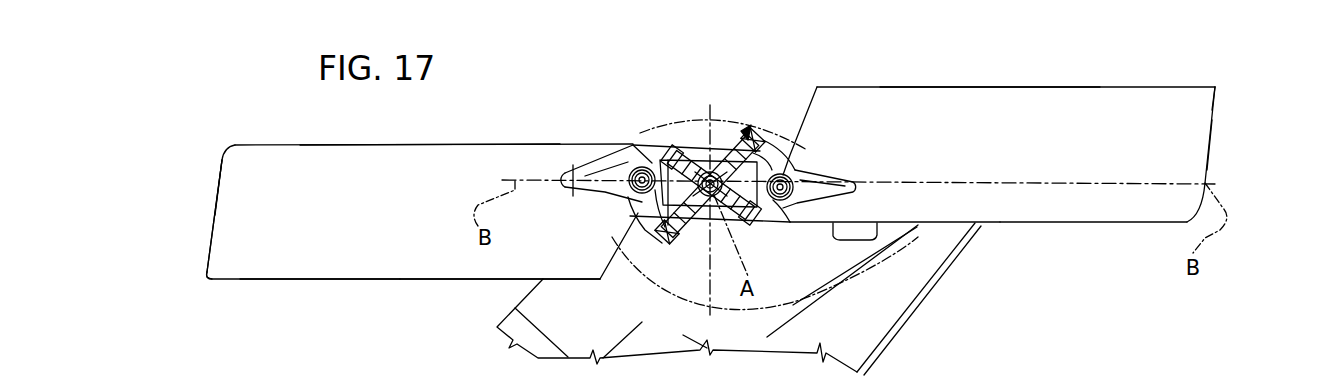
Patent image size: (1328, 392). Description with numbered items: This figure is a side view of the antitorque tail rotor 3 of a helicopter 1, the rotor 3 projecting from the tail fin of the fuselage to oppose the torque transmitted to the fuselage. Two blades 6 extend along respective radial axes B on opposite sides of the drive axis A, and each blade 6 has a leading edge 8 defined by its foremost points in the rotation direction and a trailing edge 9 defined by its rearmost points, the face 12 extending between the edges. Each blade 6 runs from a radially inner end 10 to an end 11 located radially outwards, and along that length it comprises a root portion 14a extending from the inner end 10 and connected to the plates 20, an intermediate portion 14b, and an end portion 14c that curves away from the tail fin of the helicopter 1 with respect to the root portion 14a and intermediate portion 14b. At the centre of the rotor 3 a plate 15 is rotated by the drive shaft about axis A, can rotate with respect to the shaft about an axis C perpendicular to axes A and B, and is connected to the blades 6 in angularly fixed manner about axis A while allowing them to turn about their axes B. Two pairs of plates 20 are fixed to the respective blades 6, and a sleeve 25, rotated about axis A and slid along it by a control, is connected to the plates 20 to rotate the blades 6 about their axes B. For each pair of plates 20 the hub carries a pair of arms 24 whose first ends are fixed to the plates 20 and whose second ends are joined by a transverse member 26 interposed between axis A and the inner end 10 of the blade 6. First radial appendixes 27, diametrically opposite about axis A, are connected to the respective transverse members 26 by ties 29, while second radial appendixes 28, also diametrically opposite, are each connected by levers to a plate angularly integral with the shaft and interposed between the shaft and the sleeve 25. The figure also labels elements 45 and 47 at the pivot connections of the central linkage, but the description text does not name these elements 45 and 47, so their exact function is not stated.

The helicopter 1 is at (896, 336).
The antitorque tail rotor 3 is at (244, 122).
The blade 6 is at (272, 267).
The leading edge 8 is at (156, 188).
The trailing edge 9 is at (1047, 82).
The radially inner end 10 is at (792, 153).
The end 11 is at (198, 280).
The face 12 is at (292, 180).
The root portion 14a is at (578, 157).
The intermediate portion 14b is at (357, 237).
The end portion 14c is at (224, 183).
The plate 15 is at (768, 214).
The plates 20 is at (596, 168).
The arms 24 is at (768, 150).
The sleeve 25 is at (703, 150).
The transverse member 26 is at (677, 225).
The first radial appendixes 27 is at (722, 140).
The second radial appendixes 28 is at (686, 156).
The ties 29 is at (744, 128).
The pivot bolt 45 is at (640, 142).
The lever 47 is at (806, 107).